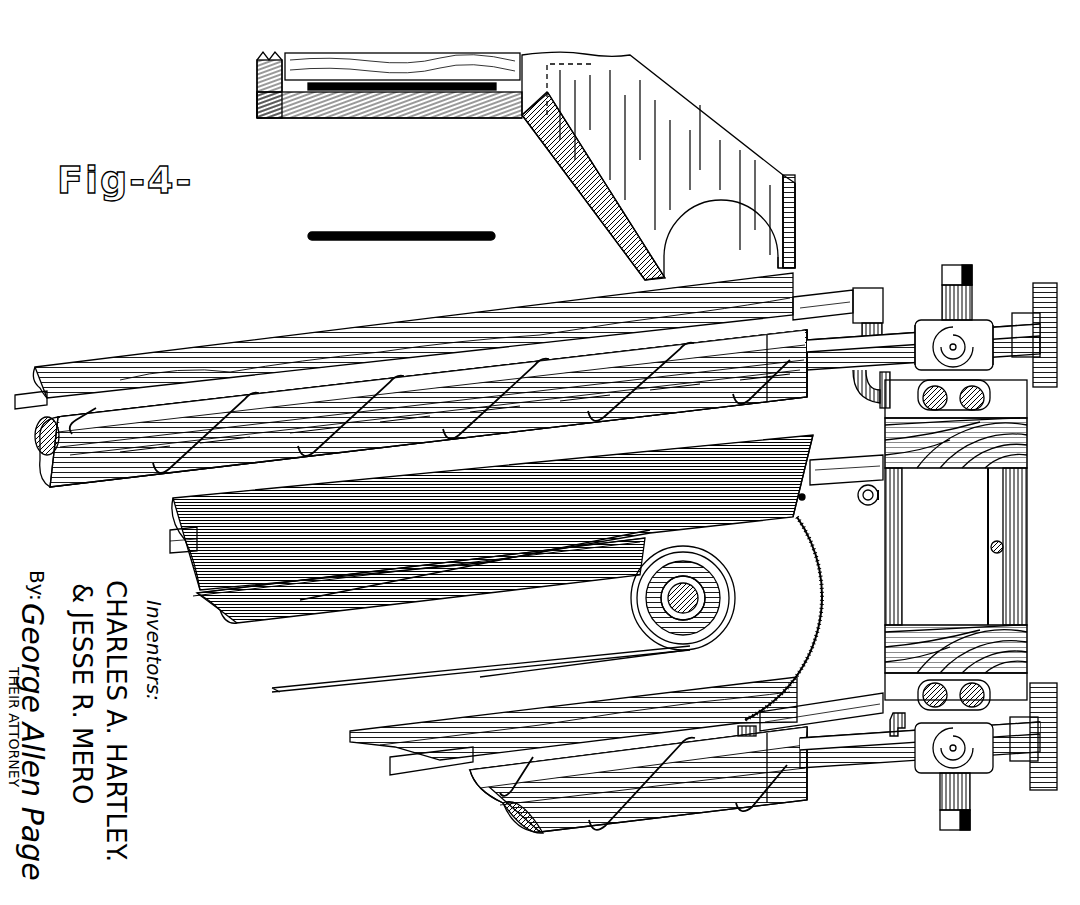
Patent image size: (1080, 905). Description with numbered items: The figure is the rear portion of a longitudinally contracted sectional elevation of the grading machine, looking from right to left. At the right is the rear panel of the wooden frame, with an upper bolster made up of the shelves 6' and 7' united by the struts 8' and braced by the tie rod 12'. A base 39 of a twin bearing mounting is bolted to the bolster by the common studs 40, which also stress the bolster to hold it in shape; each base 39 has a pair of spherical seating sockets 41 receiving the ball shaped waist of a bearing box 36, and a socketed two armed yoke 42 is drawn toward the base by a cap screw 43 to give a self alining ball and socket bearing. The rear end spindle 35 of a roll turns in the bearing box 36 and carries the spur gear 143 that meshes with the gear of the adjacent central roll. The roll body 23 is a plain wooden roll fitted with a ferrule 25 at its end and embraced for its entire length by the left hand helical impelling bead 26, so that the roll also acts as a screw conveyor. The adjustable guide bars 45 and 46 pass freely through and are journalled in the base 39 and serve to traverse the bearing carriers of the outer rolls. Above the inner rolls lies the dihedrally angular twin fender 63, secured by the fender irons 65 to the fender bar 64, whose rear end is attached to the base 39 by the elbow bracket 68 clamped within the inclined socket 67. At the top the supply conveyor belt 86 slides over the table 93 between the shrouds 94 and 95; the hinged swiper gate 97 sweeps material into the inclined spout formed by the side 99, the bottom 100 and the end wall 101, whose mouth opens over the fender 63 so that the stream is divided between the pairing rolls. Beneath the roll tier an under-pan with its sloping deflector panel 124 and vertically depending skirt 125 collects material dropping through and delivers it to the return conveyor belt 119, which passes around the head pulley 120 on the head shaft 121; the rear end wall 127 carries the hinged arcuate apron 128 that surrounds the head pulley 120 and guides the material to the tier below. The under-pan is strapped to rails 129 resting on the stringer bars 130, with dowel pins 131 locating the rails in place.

The upper bolster shelf 6' is at (972, 446).
The upper bolster shelf 7' is at (970, 637).
The strut 8' is at (978, 546).
The tie rod 12' is at (979, 538).
The roll body 23 is at (411, 581).
The ferrule 25 is at (780, 569).
The left hand helical impelling bead 26 is at (640, 378).
The rear end spindle 35 is at (998, 322).
The bearing box 36 is at (954, 546).
The base 39 is at (993, 396).
The common stud 40 is at (1018, 528).
The spherical seating socket 41 is at (990, 384).
The two armed yoke 42 is at (942, 300).
The cap screw 43 is at (958, 266).
The forward guide bar 45 is at (923, 402).
The hinder guide bar 46 is at (984, 393).
The twin fender 63 is at (415, 516).
The fender bar 64 is at (823, 297).
The fender iron 65 is at (750, 738).
The inclined socket 67 is at (882, 410).
The elbow bracket 68 is at (856, 397).
The belt 86 is at (312, 86).
The table 93 is at (345, 108).
The shroud 94 is at (258, 86).
The shroud 95 is at (578, 88).
The swiper gate 97 is at (402, 66).
The spout side 99 is at (680, 98).
The spout bottom 100 is at (583, 196).
The end wall 101 is at (797, 214).
The belt 119 is at (728, 585).
The head pulley 120 is at (662, 597).
The head shaft 121 is at (675, 612).
The sloping deflector panel 124 is at (531, 472).
The vertically depending skirt 125 is at (467, 597).
The rear end wall 127 is at (805, 498).
The arcuate apron 128 is at (818, 580).
The rail 129 is at (170, 540).
The stringer bar 130 is at (880, 508).
The dowel pin 131 is at (858, 502).
The spur gear 143 is at (1040, 283).